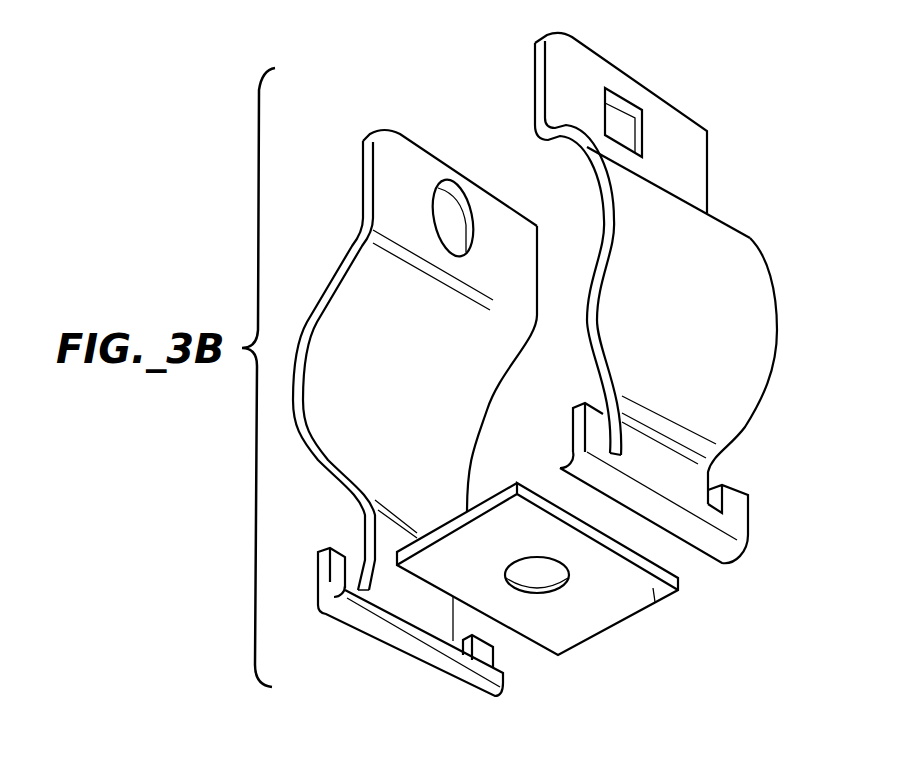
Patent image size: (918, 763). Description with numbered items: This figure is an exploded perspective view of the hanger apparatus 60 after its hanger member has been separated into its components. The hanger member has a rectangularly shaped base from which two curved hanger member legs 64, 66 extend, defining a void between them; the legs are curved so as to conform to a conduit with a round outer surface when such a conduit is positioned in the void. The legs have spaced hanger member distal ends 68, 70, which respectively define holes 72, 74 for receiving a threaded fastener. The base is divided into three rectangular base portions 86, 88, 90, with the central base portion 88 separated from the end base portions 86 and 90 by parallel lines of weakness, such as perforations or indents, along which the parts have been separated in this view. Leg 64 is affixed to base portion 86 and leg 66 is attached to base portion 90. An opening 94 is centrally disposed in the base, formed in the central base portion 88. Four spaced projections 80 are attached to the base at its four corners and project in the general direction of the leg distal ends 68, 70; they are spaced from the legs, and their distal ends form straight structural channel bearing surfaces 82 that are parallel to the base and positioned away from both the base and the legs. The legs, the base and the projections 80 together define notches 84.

The hanger apparatus 60 is at (779, 329).
The hanger member leg 64 is at (350, 257).
The hanger member leg 66 is at (740, 248).
The hanger member distal end 68 is at (397, 138).
The hanger member distal end 70 is at (578, 46).
The hole 72 is at (437, 203).
The hole 74 is at (605, 118).
The projection 80 is at (332, 572).
The structural channel bearing surface 82 is at (330, 552).
The notch 84 is at (357, 567).
The base portion 86 is at (373, 618).
The central base portion 88 is at (653, 588).
The base portion 90 is at (722, 558).
The opening 94 is at (543, 565).